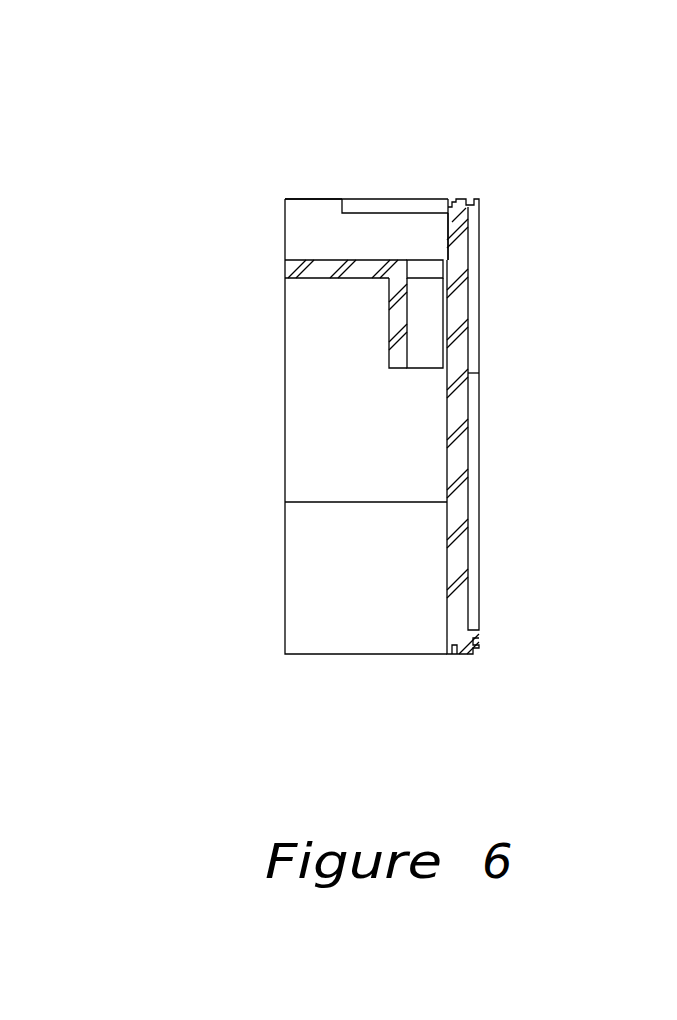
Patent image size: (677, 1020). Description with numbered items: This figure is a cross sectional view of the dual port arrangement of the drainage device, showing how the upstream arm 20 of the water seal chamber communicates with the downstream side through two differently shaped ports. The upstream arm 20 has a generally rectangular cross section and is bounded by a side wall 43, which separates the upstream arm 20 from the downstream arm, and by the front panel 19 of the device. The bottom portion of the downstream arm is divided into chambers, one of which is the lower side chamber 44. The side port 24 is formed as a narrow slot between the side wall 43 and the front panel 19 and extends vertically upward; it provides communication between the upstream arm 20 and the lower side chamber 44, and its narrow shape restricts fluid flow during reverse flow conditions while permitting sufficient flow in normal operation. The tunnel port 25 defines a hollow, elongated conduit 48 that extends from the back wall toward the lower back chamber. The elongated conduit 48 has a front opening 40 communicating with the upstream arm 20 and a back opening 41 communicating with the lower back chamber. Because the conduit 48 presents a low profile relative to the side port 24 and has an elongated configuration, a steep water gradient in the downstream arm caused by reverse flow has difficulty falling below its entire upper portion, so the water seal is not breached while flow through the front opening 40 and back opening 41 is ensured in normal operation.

The front panel 19 is at (313, 199).
The upstream arm 20 is at (370, 234).
The side port 24 is at (433, 198).
The tunnel port 25 is at (388, 323).
The front opening 40 is at (428, 268).
The back opening 41 is at (427, 368).
The side wall 43 is at (298, 233).
The lower side chamber 44 is at (332, 450).
The elongated conduit 48 is at (425, 327).